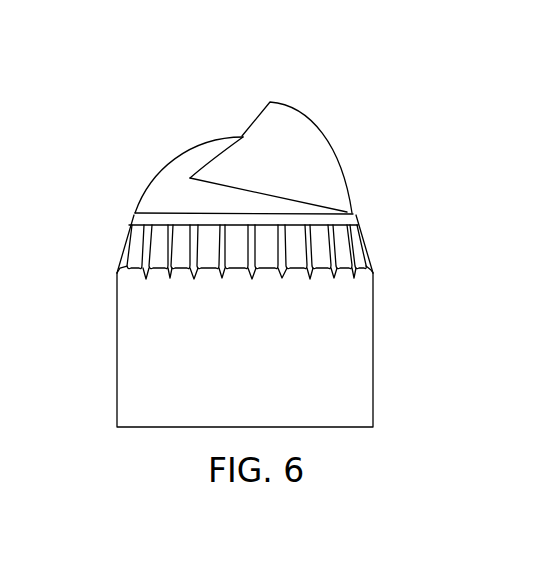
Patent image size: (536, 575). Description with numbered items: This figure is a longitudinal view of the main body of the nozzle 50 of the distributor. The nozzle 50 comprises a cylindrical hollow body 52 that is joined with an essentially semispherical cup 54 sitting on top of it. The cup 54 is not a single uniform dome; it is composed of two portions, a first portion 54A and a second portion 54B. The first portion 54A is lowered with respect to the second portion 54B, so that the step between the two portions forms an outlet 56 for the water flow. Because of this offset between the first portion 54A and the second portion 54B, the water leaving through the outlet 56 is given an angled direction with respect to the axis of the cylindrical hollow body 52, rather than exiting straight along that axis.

The nozzle 50 is at (140, 102).
The cylindrical hollow body 52 is at (118, 388).
The semispherical cup 54 is at (118, 208).
The first portion 54A is at (222, 137).
The second portion 54B is at (323, 137).
The outlet 56 is at (259, 116).